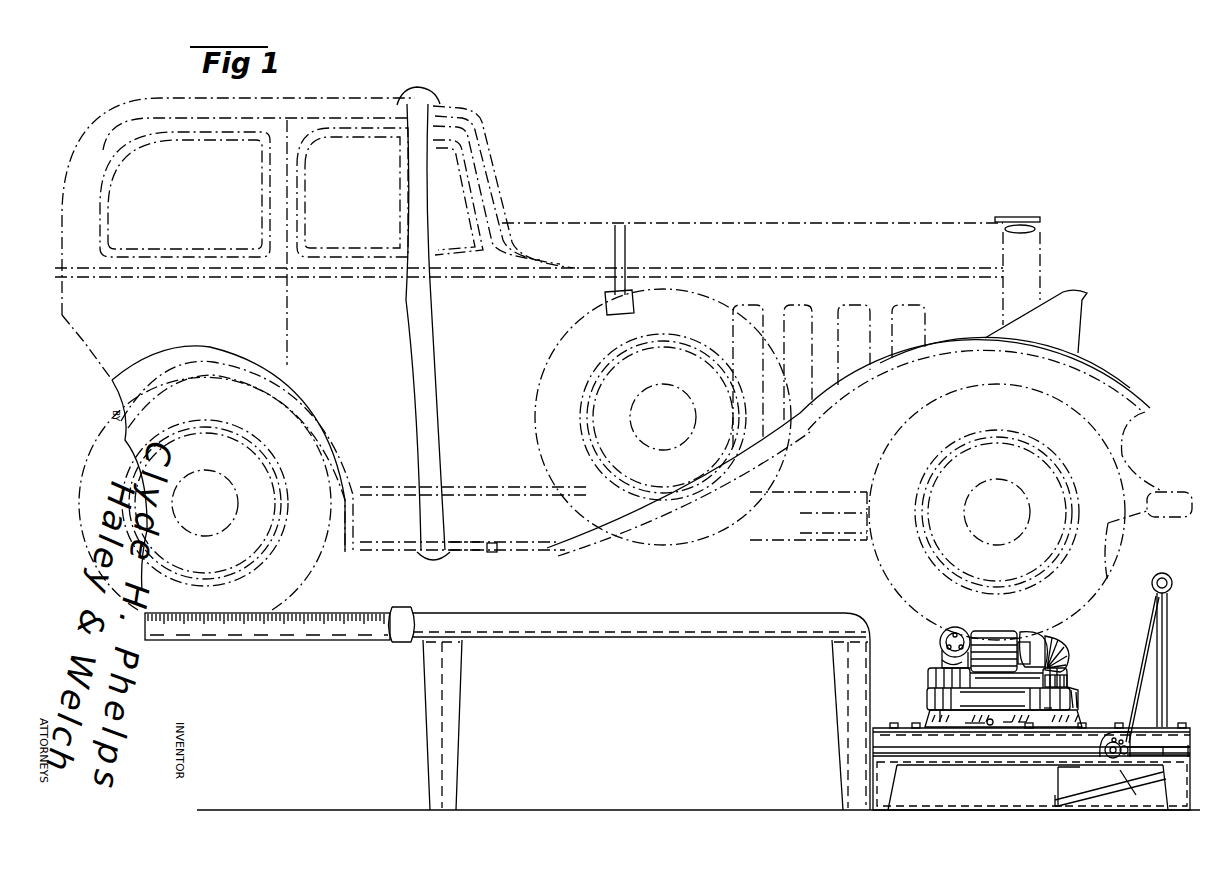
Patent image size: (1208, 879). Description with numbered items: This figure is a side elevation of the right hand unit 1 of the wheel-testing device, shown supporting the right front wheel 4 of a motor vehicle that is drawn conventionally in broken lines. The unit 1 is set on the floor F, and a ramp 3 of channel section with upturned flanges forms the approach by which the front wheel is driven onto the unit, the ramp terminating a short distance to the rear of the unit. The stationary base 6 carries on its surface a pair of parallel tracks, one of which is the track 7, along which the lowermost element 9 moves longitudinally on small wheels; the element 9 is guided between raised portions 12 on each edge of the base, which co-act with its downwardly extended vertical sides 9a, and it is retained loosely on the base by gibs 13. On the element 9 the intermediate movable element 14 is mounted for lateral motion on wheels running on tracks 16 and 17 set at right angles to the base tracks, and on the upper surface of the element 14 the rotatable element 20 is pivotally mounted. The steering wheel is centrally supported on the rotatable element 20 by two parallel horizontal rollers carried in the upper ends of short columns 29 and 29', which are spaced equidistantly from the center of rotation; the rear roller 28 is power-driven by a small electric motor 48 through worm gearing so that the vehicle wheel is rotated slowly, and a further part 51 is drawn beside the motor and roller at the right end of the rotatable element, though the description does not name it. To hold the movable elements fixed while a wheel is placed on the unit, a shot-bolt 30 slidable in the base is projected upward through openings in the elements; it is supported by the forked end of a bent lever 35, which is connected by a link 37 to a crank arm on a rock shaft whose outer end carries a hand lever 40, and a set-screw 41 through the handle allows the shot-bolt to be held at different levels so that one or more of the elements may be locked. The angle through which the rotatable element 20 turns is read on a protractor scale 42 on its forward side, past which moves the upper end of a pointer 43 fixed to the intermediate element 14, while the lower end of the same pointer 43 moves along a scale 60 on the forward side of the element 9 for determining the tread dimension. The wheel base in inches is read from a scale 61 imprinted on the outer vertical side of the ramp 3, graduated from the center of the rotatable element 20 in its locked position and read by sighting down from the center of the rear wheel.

The right hand unit 1 is at (1025, 786).
The ramp 3 is at (640, 628).
The right front wheel 4 is at (877, 563).
The stationary base 6 is at (977, 723).
The track 7 is at (912, 727).
The lowermost movable element 9 is at (933, 720).
The vertical sides 9a is at (997, 727).
The raised portion 12 is at (1043, 713).
The gib 13 is at (1017, 730).
The intermediate movable element 14 is at (932, 697).
The track 16 is at (1047, 710).
The track 17 is at (945, 710).
The rotatable element 20 is at (930, 673).
The roller 28 is at (940, 636).
The column 29 is at (931, 647).
The column 29' is at (1070, 631).
The shot-bolt 30 is at (1060, 777).
The bent lever 35 is at (1102, 792).
The link 37 is at (1123, 777).
The hand lever 40 is at (1145, 748).
The set-screw 41 is at (1121, 745).
The protractor scale 42 is at (1062, 681).
The pointer 43 is at (1072, 698).
The electric motor 48 is at (990, 648).
The fan 51 is at (1070, 647).
The scale 60 is at (1077, 718).
The scale 61 is at (218, 613).
The floor F is at (948, 807).